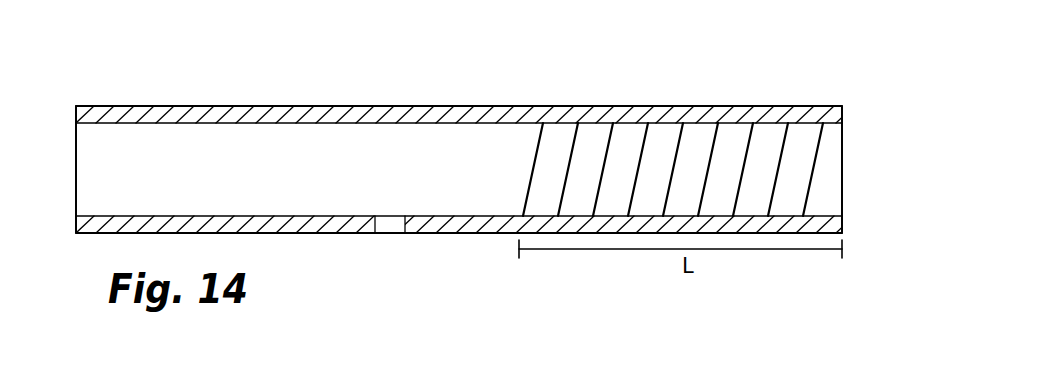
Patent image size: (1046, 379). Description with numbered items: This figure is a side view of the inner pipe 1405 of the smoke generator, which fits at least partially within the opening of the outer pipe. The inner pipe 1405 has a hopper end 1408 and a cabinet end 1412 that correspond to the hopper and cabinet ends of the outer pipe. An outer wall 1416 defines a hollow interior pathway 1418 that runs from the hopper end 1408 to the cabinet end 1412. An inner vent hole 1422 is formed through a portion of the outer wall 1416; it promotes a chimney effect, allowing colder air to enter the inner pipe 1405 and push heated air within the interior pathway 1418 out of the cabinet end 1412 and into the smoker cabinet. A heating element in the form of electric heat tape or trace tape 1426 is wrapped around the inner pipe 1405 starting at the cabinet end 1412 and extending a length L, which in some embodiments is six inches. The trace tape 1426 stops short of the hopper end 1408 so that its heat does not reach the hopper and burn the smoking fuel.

The inner pipe 1405 is at (122, 93).
The hopper end 1408 is at (76, 167).
The cabinet end 1412 is at (843, 170).
The outer wall 1416 is at (398, 120).
The hollow interior pathway 1418 is at (228, 153).
The inner vent hole 1422 is at (388, 234).
The trace tape 1426 is at (730, 142).